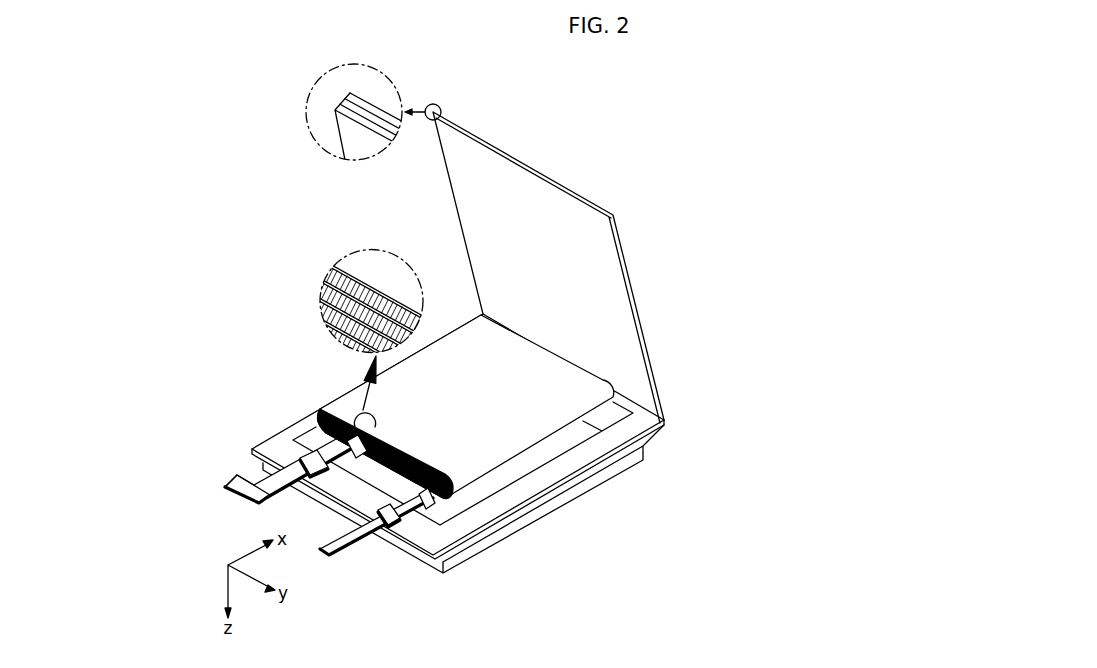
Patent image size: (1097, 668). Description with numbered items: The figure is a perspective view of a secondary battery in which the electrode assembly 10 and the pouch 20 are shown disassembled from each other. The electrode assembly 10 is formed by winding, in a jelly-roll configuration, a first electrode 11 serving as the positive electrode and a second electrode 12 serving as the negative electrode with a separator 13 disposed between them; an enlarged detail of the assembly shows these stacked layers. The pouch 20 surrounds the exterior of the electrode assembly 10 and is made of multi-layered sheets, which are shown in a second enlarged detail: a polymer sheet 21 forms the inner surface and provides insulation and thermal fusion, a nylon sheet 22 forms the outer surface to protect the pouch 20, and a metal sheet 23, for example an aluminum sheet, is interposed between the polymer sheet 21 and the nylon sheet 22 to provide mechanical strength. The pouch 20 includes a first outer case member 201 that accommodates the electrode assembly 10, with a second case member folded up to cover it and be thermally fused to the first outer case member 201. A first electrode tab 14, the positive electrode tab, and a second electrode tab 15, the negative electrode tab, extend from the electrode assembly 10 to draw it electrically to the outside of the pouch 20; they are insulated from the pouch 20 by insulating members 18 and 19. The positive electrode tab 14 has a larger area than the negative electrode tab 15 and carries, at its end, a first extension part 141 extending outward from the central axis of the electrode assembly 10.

The electrode assembly 10 is at (435, 360).
The first electrode 11 is at (338, 298).
The second electrode 12 is at (338, 276).
The separator 13 is at (400, 302).
The first electrode tab 14 is at (257, 466).
The first extension part 141 is at (224, 478).
The second electrode tab 15 is at (362, 538).
The insulating member 18 is at (307, 460).
The insulating member 19 is at (393, 526).
The pouch 20 is at (439, 238).
The polymer sheet 21 is at (343, 126).
The nylon sheet 22 is at (350, 94).
The metal sheet 23 is at (343, 102).
The first outer case member 201 is at (534, 510).